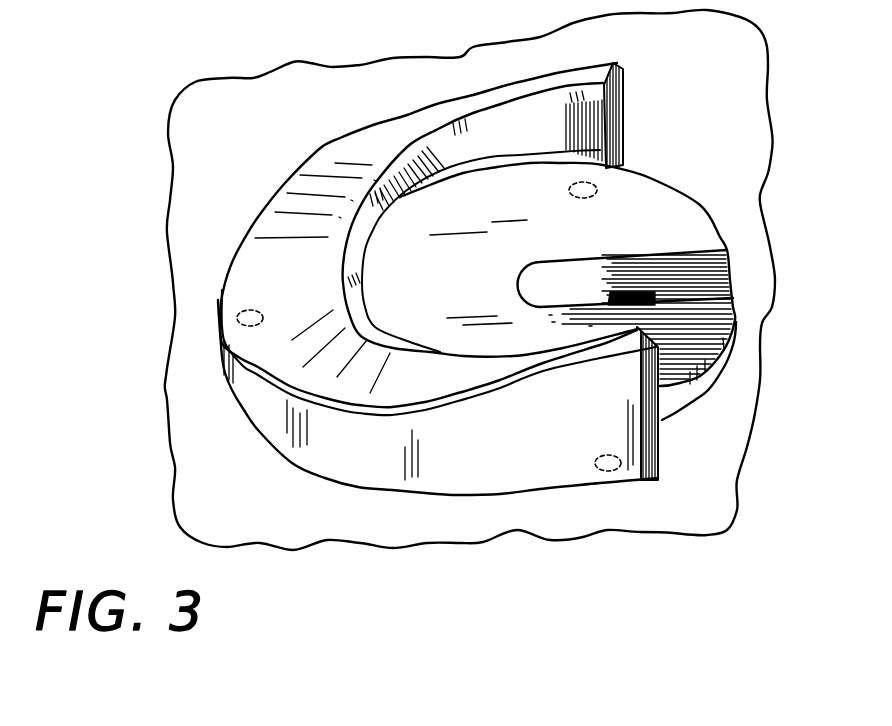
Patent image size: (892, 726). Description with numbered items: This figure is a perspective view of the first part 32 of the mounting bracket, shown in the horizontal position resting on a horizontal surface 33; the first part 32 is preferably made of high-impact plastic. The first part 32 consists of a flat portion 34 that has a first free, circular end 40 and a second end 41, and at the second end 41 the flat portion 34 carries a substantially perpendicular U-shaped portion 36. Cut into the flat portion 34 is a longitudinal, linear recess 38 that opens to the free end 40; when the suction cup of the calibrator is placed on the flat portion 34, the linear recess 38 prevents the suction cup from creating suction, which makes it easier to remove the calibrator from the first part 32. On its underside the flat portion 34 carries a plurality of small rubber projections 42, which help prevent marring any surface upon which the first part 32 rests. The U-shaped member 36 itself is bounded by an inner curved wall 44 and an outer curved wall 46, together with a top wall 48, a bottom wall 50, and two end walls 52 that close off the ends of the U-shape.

The first part 32 is at (263, 171).
The horizontal surface 33 is at (768, 102).
The flat portion 34 is at (654, 184).
The U-shaped portion 36 is at (357, 128).
The linear recess 38 is at (672, 253).
The first free circular end 40 is at (723, 384).
The second end 41 is at (362, 291).
The rubber projections 42 is at (262, 308).
The inner curved wall 44 is at (425, 194).
The outer curved wall 46 is at (540, 476).
The top wall 48 is at (262, 217).
The bottom wall 50 is at (325, 473).
The end walls 52 is at (623, 127).